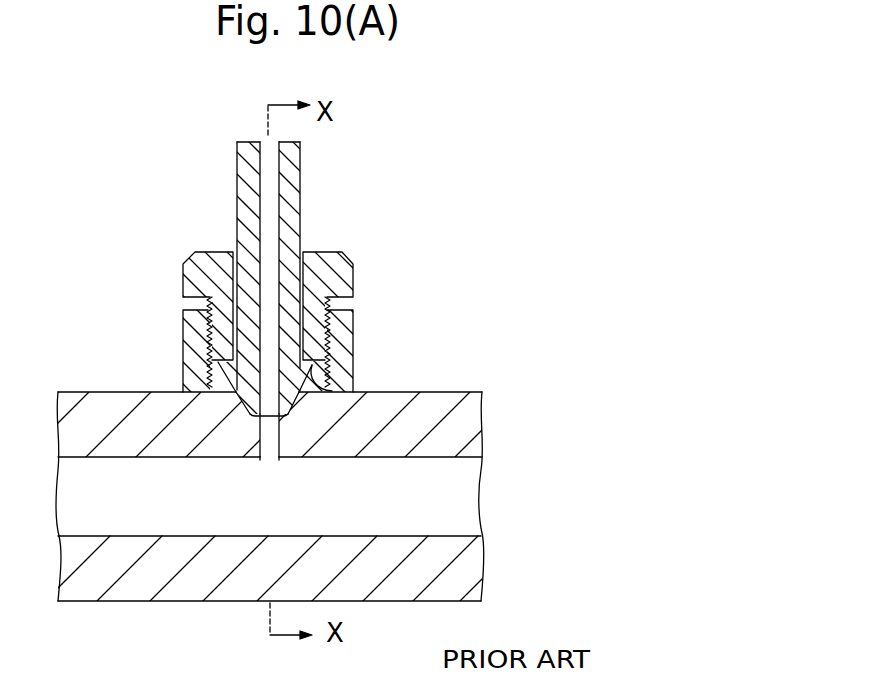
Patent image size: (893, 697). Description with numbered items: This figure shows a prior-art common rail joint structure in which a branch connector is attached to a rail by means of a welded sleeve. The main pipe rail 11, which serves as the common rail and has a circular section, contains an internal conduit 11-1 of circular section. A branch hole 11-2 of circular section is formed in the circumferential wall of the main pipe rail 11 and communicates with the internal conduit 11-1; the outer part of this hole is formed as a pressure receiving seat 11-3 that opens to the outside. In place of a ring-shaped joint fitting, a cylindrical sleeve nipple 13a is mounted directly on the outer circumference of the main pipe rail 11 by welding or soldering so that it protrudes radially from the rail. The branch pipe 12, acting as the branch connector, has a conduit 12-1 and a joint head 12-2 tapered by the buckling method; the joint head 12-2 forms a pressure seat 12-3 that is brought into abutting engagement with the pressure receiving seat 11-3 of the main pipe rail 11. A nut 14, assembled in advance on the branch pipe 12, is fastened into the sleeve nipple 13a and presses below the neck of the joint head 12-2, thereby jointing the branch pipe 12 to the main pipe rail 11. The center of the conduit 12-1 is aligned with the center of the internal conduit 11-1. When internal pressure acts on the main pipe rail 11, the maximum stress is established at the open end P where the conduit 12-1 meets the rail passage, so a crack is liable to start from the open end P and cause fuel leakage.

The main pipe rail 11 is at (398, 400).
The internal conduit 11-1 is at (447, 458).
The branch hole 11-2 is at (267, 462).
The pressure receiving seat 11-3 is at (290, 414).
The open end P is at (280, 460).
The branch pipe 12 is at (296, 192).
The conduit 12-1 is at (279, 180).
The joint head 12-2 is at (238, 392).
The pressure seat 12-3 is at (314, 383).
The cylindrical sleeve nipple 13a is at (347, 325).
The nut 14 is at (337, 263).